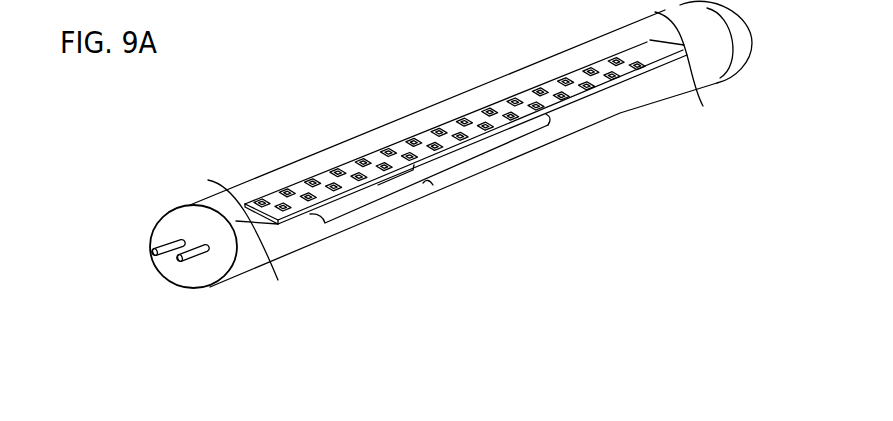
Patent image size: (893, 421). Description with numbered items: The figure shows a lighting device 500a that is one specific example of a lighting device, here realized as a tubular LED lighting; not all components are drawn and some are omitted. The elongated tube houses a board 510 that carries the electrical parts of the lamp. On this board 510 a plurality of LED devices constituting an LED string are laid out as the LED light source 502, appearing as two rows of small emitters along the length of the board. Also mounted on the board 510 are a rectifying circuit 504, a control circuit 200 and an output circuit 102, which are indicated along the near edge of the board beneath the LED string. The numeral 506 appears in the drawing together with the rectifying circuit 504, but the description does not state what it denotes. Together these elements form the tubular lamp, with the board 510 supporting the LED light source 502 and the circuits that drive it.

The lighting device 500a is at (451, 174).
The board 510 is at (667, 64).
The output circuit 102 is at (549, 126).
The LED light source 502 is at (438, 129).
The control circuit 200 is at (477, 156).
The rectifying circuit 504 is at (425, 215).
The contact element 506 is at (403, 186).